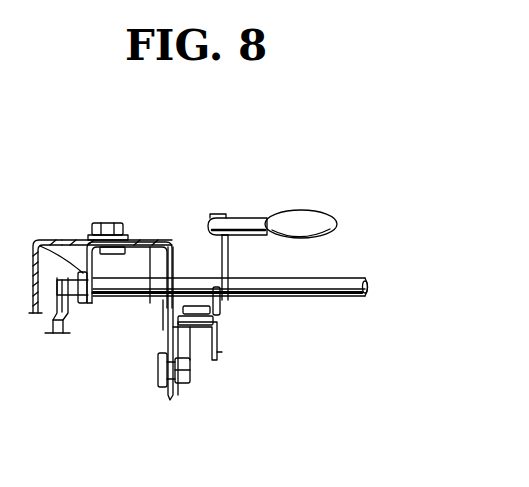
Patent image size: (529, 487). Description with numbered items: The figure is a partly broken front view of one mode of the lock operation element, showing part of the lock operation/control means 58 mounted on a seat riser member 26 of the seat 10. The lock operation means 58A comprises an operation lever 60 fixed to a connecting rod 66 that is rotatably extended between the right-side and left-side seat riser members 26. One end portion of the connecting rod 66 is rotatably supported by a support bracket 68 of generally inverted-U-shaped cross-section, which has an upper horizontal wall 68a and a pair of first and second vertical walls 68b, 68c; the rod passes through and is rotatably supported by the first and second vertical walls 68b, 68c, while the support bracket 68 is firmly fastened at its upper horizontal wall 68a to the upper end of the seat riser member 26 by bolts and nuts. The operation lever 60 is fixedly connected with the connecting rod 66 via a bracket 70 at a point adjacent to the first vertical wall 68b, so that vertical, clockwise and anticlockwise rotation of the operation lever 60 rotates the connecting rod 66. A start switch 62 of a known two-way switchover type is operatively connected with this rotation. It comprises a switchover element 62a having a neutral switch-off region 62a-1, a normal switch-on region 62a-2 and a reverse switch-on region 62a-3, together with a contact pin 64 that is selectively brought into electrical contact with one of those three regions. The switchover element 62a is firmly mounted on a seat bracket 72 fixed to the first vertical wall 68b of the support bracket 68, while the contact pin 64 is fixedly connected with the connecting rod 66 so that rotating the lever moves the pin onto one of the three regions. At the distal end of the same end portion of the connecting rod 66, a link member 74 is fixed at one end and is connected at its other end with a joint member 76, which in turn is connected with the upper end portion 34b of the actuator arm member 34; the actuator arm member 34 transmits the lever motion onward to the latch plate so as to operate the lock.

The seat assembly 10 is at (303, 172).
The seat riser member 26 is at (76, 240).
The actuator arm member 34 is at (72, 340).
The upper end portion of actuator arm member 34b is at (70, 325).
The lock operation/control means 58 is at (352, 178).
The lock operation means 58A is at (228, 193).
The operation lever 60 is at (250, 225).
The start switch 62 is at (228, 323).
The switchover element 62a is at (163, 314).
The neutral switch-off region 62a-1 is at (168, 318).
The normal switch-on region 62a-2 is at (193, 306).
The reverse switch-on region 62a-3 is at (195, 335).
The contact pin 64 is at (217, 313).
The connecting rod 66 is at (338, 280).
The support bracket 68 is at (140, 242).
The upper horizontal wall 68a is at (154, 242).
The first vertical wall 68b is at (170, 402).
The second vertical wall 68c is at (83, 240).
The bracket 70 is at (230, 259).
The seat bracket 72 is at (218, 352).
The link member 74 is at (46, 242).
The joint member 76 is at (57, 287).